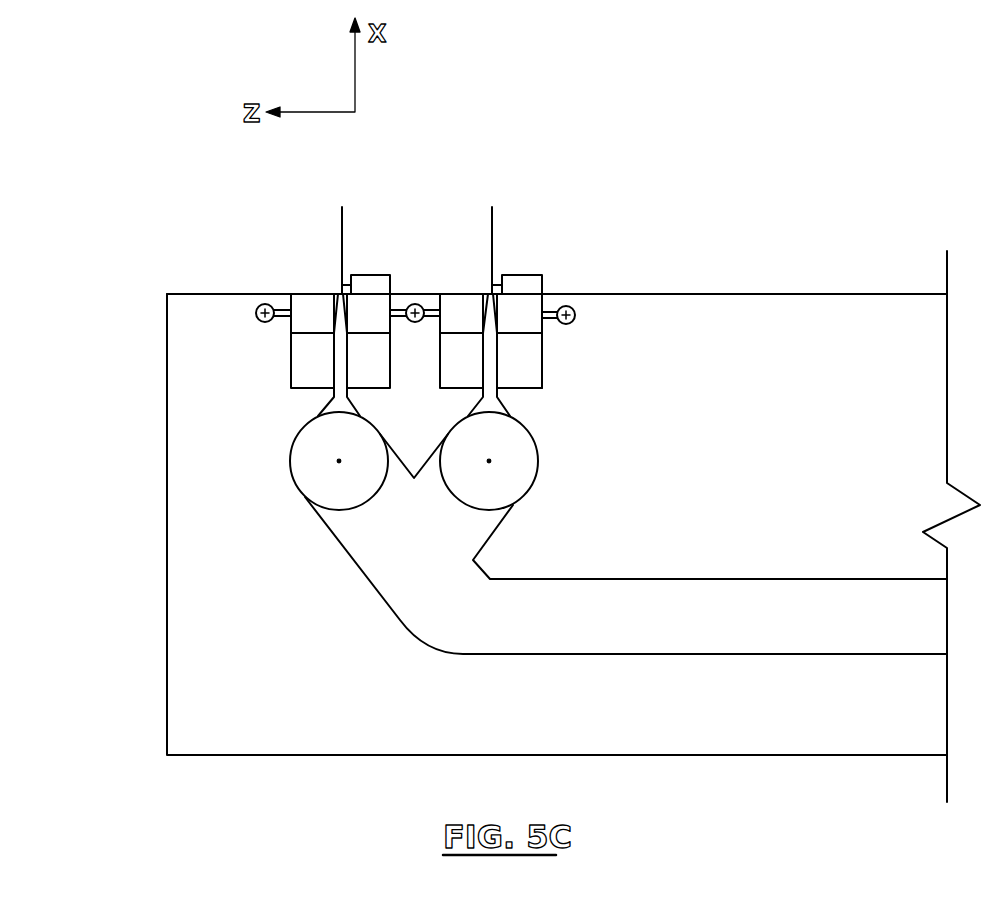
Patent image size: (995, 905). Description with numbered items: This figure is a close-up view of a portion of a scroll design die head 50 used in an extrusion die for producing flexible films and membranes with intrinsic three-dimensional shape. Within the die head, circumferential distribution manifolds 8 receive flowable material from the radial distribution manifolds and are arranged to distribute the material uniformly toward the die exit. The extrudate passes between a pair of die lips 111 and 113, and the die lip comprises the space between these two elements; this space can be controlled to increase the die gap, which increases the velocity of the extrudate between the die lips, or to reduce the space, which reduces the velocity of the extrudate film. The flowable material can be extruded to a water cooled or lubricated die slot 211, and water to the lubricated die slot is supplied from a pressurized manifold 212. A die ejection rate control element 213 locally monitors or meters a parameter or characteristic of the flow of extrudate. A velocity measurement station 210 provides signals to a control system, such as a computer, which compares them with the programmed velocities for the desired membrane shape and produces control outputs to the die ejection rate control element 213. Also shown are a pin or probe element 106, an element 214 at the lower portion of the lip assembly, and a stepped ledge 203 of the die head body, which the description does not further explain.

The scroll design die head 50 is at (167, 637).
The ledge 203 is at (645, 579).
The circumferential distribution manifold 8 is at (291, 452).
The die lip 111 is at (302, 293).
The die lip 113 is at (367, 308).
The pin 106 is at (337, 292).
The velocity measurement station 210 is at (540, 306).
The lubricated die slot 211 is at (518, 308).
The pressurized manifold 212 is at (575, 315).
The die ejection rate control element 213 is at (543, 368).
The pin neck 214 is at (500, 401).